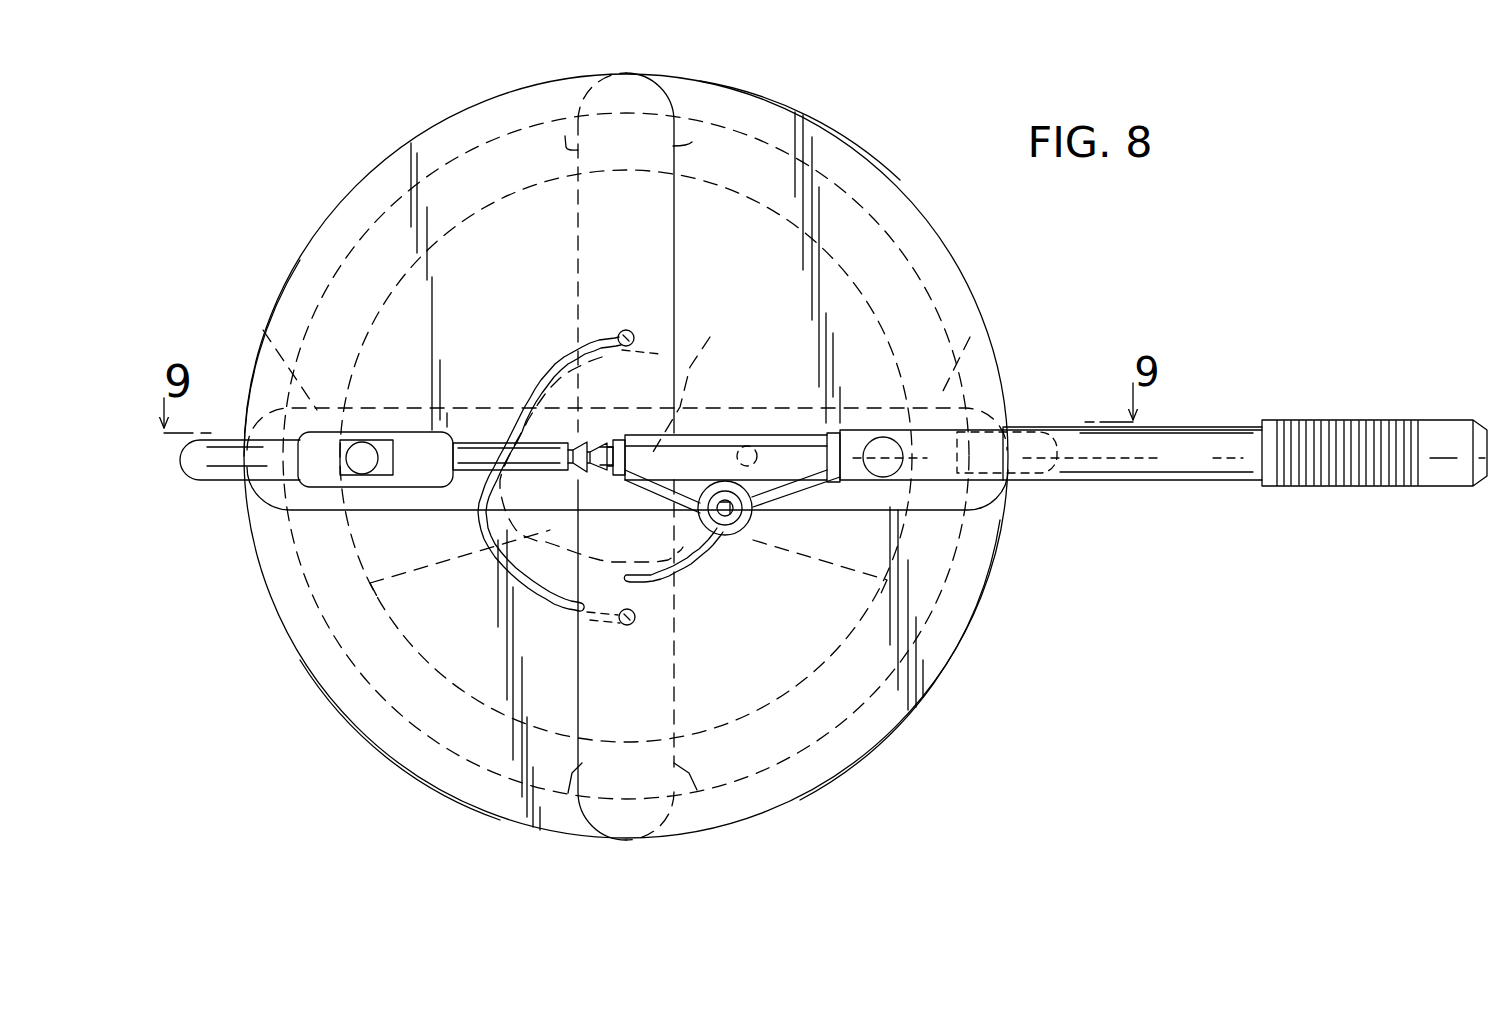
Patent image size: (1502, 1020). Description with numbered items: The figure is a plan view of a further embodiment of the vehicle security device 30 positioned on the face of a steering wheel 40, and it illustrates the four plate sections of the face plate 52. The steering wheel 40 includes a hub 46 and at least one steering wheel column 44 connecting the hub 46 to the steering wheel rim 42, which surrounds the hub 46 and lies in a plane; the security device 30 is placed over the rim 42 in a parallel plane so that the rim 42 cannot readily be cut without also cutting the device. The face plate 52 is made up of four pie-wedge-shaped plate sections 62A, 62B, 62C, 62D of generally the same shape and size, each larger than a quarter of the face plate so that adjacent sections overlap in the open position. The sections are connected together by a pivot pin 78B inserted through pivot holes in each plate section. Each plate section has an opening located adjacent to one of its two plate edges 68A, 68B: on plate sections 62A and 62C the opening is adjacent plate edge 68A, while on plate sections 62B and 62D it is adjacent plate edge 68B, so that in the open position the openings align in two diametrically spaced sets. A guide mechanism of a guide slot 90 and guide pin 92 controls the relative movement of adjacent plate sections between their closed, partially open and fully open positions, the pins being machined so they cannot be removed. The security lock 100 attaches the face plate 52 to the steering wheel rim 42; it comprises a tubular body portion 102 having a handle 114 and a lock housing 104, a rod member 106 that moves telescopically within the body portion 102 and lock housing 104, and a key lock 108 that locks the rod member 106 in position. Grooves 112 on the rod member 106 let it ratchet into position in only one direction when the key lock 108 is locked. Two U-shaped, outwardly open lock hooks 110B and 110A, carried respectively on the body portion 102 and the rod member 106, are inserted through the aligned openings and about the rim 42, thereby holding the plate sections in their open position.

The security device 30 is at (892, 142).
The face plate 52 is at (345, 192).
The plate section 62A is at (300, 272).
The plate section 62B is at (782, 110).
The plate section 62C is at (873, 747).
The plate section 62D is at (389, 754).
The steering wheel rim 42 is at (908, 268).
The steering wheel 40 is at (935, 290).
The plate edge 68A is at (565, 136).
The plate edge 68B is at (692, 142).
The steering wheel column 44 is at (432, 568).
The hub 46 is at (710, 337).
The pivot pin 78B is at (622, 438).
The guide slot 90 is at (550, 367).
The guide pin 92 is at (637, 328).
The security lock 100 is at (757, 430).
The tubular body portion 102 is at (1162, 463).
The lock housing 104 is at (697, 443).
The rod member 106 is at (490, 450).
The key lock 108 is at (742, 538).
The lock hook 110A is at (365, 428).
The lock hook 110B is at (1037, 432).
The grooves 112 is at (588, 440).
The handle 114 is at (1337, 428).